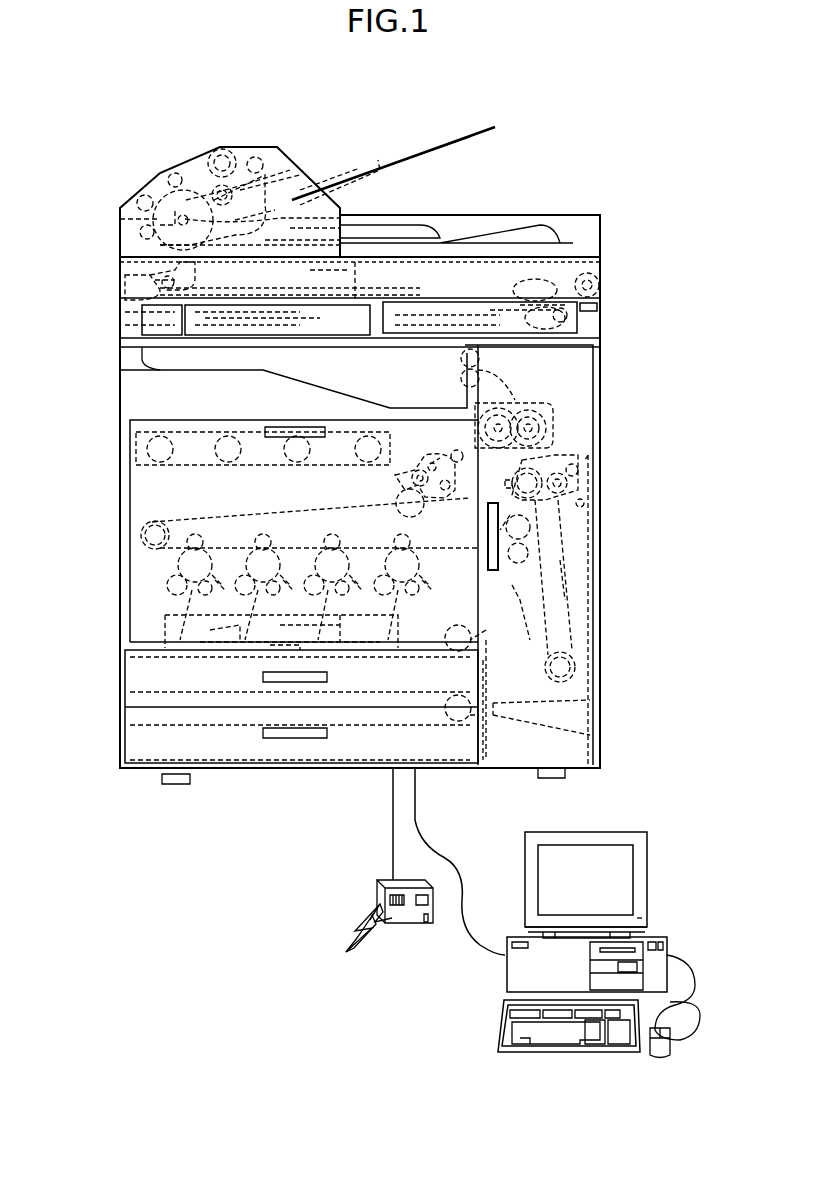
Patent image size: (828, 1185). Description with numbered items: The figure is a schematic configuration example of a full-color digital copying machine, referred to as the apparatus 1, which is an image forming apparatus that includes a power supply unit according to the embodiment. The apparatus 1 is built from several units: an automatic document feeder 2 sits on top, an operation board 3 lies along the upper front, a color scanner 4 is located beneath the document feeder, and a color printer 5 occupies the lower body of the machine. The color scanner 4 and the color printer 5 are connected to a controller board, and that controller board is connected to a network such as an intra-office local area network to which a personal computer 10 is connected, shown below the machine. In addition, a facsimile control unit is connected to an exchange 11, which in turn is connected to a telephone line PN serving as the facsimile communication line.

The full-color digital copying machine 1 is at (426, 132).
The automatic document feeder 2 is at (138, 196).
The operation board 3 is at (578, 316).
The color scanner 4 is at (120, 276).
The color printer 5 is at (120, 444).
The personal computer 10 is at (622, 832).
The exchange 11 is at (400, 924).
The telephone line PN is at (357, 942).